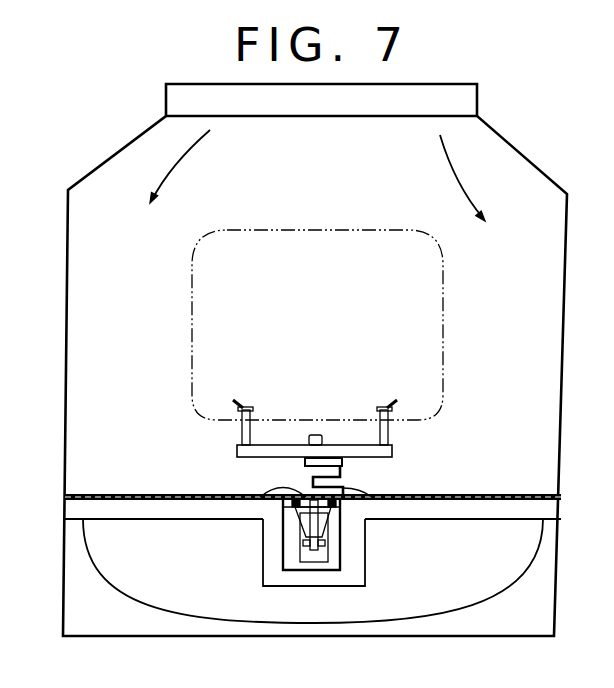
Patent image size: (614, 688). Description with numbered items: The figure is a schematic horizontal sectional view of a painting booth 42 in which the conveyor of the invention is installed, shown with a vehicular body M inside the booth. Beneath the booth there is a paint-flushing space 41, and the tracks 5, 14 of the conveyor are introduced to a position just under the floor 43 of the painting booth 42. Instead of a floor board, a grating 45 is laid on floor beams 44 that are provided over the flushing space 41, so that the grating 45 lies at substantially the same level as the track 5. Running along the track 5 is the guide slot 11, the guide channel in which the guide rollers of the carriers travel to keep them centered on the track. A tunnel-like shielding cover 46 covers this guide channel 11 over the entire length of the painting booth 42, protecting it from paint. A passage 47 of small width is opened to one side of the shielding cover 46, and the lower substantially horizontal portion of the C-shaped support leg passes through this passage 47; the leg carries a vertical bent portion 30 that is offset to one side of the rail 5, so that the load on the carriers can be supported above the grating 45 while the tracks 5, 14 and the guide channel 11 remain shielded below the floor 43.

The painting booth 42 is at (565, 268).
The vehicular body M is at (443, 320).
The shielding cover 46 is at (332, 479).
The passage 47 is at (338, 480).
The floor 43 is at (450, 500).
The grating 45 is at (413, 500).
The floor beams 44 is at (445, 513).
The paint-flushing space 41 is at (435, 585).
The guide slot 11 is at (258, 503).
The vertical bent portion 30 is at (348, 488).
The track 5 is at (333, 522).
The track 14 is at (323, 550).